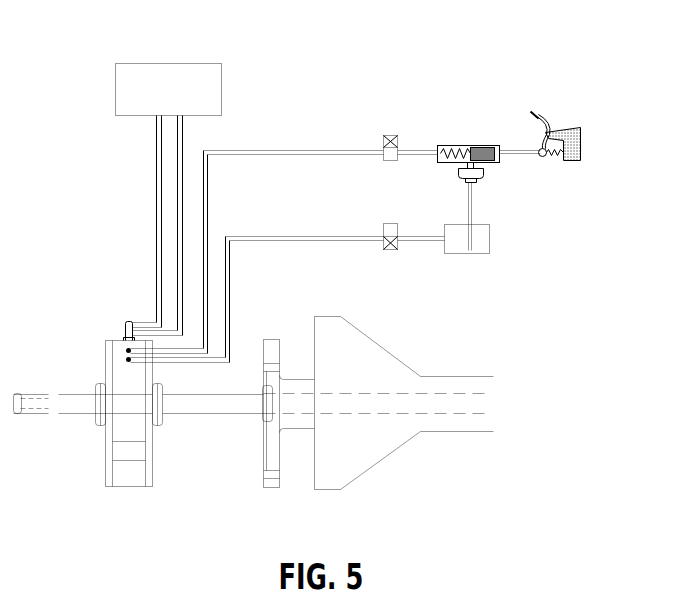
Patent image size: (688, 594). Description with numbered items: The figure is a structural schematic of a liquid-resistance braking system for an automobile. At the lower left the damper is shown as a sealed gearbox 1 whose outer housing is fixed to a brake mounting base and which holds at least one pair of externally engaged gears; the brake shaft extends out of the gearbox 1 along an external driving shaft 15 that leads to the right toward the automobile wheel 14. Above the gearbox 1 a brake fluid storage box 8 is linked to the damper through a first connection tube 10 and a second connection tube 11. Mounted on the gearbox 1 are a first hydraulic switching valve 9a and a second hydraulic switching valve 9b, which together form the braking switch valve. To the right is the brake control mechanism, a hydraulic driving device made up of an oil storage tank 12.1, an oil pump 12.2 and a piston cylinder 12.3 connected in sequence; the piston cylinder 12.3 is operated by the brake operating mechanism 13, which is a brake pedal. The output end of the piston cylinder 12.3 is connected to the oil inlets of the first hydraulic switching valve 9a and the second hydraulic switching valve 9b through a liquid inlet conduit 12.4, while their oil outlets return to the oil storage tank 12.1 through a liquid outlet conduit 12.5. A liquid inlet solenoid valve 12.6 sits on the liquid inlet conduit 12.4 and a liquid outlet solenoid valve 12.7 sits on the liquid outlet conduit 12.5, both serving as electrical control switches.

The gearbox 1 is at (128, 468).
The brake fluid storage box 8 is at (140, 72).
The first hydraulic switching valve 9a is at (126, 350).
The second hydraulic switching valve 9b is at (126, 358).
The first connection tube 10 is at (180, 163).
The second connection tube 11 is at (155, 153).
The oil storage tank 12.1 is at (478, 246).
The oil pump 12.2 is at (480, 175).
The piston cylinder 12.3 is at (480, 148).
The liquid inlet conduit 12.4 is at (278, 151).
The liquid outlet conduit 12.5 is at (278, 238).
The liquid inlet solenoid valve 12.6 is at (390, 148).
The liquid outlet solenoid valve 12.7 is at (393, 232).
The brake operating mechanism 13 is at (580, 128).
The automobile wheel 14 is at (267, 463).
The external driving shaft 15 is at (205, 403).